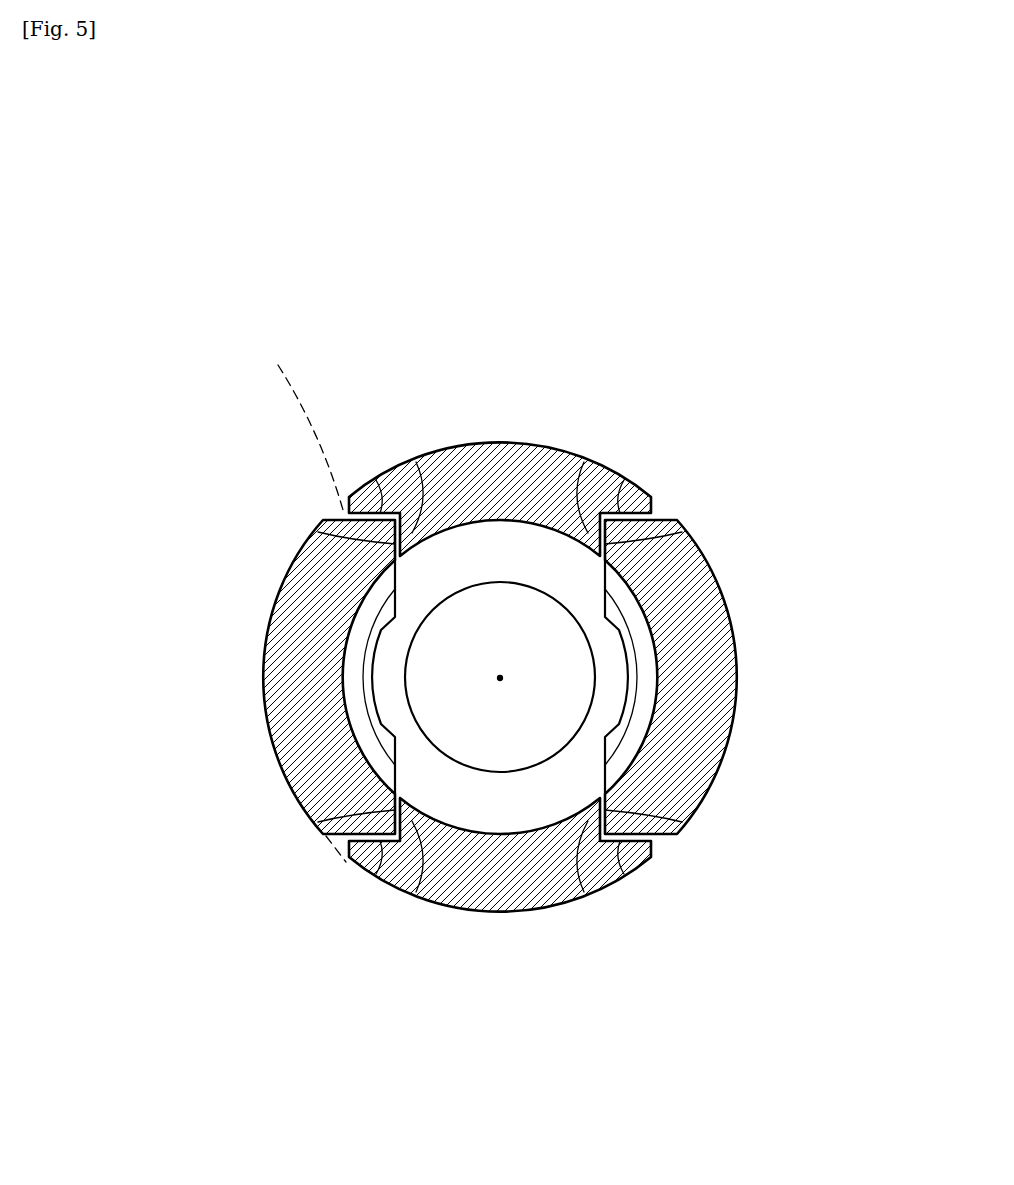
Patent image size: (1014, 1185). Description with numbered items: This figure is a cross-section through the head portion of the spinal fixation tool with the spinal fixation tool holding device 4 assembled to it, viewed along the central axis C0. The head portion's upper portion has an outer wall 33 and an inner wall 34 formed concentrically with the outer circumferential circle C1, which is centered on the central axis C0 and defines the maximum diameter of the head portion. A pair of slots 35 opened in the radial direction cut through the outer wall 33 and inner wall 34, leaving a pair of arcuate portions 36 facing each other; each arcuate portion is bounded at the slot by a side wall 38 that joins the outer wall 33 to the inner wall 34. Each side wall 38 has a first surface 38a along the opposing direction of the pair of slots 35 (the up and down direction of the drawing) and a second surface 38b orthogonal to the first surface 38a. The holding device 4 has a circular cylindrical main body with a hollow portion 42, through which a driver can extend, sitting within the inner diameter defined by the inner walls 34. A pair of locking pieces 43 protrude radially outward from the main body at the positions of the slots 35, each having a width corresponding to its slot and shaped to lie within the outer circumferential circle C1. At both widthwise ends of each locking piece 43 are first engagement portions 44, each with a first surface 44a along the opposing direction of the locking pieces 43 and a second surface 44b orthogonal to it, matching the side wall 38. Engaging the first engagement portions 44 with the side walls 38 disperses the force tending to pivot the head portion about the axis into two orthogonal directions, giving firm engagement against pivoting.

The spinal fixation tool holding device 4 is at (510, 310).
The outer wall 33 is at (264, 632).
The inner wall 34 is at (372, 687).
The slots 35 is at (512, 548).
The arcuate portions 36 is at (290, 693).
The side wall 38 is at (188, 467).
The first surface 38a is at (316, 534).
The second surface 38b is at (322, 521).
The hollow portion 42 is at (487, 645).
The locking pieces 43 is at (483, 463).
The first engagement portions 44 is at (435, 385).
The first surface 44a is at (412, 460).
The second surface 44b is at (377, 481).
The central axis C0 is at (497, 716).
The outer circumferential circle C1 is at (303, 598).